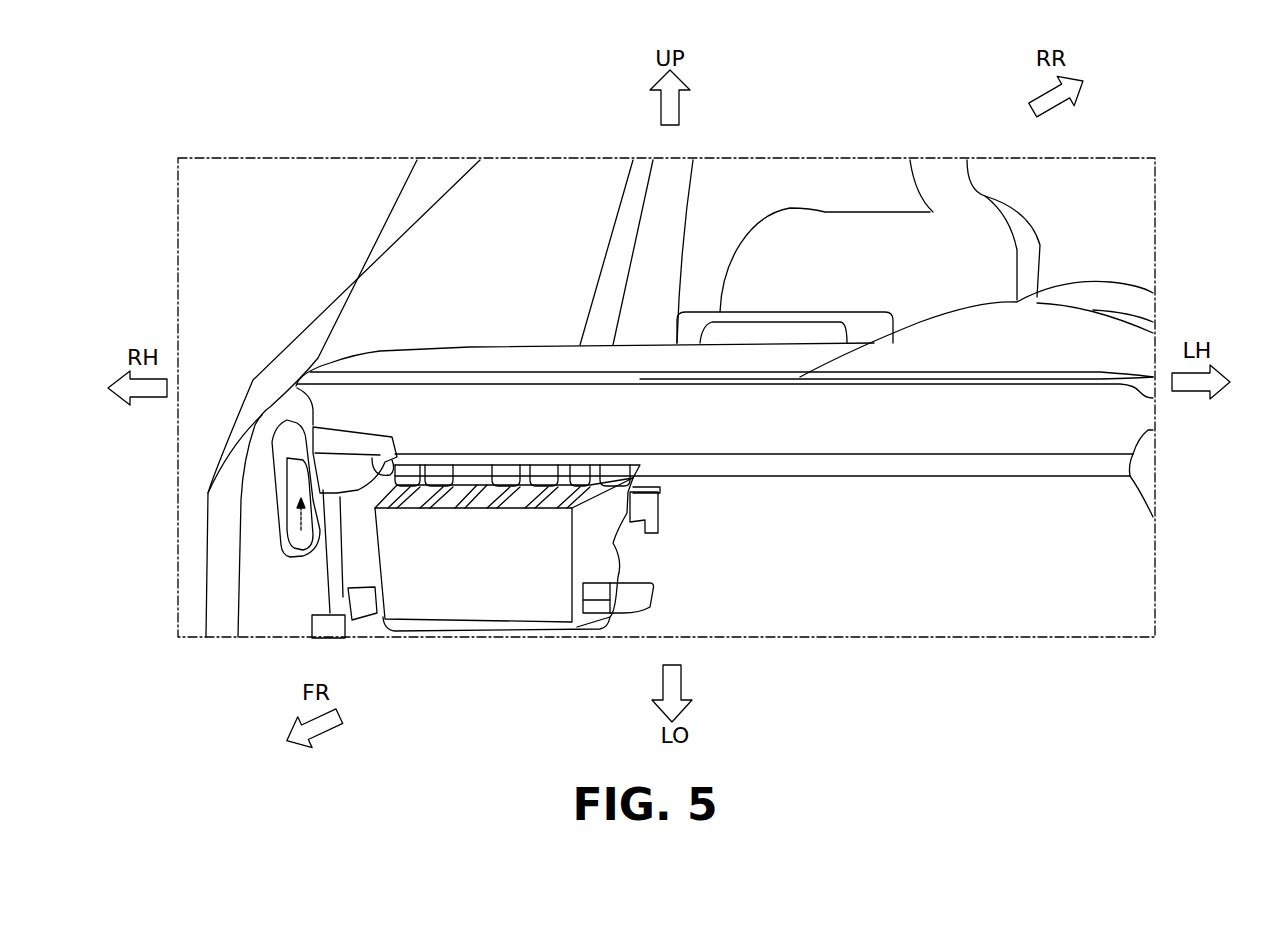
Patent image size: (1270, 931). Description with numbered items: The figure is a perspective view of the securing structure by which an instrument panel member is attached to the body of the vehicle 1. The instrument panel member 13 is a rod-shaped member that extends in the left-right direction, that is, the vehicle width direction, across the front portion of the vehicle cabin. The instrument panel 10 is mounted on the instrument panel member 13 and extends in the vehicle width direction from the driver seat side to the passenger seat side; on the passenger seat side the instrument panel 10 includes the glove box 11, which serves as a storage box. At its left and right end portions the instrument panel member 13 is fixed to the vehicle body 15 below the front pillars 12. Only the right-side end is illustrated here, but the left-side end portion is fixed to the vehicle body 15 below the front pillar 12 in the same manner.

The vehicle 1 is at (1124, 153).
The instrument panel 10 is at (528, 357).
The glove box 11 is at (480, 543).
The front pillar 12 is at (377, 237).
The instrument panel member 13 is at (893, 472).
The vehicle body 15 is at (298, 535).